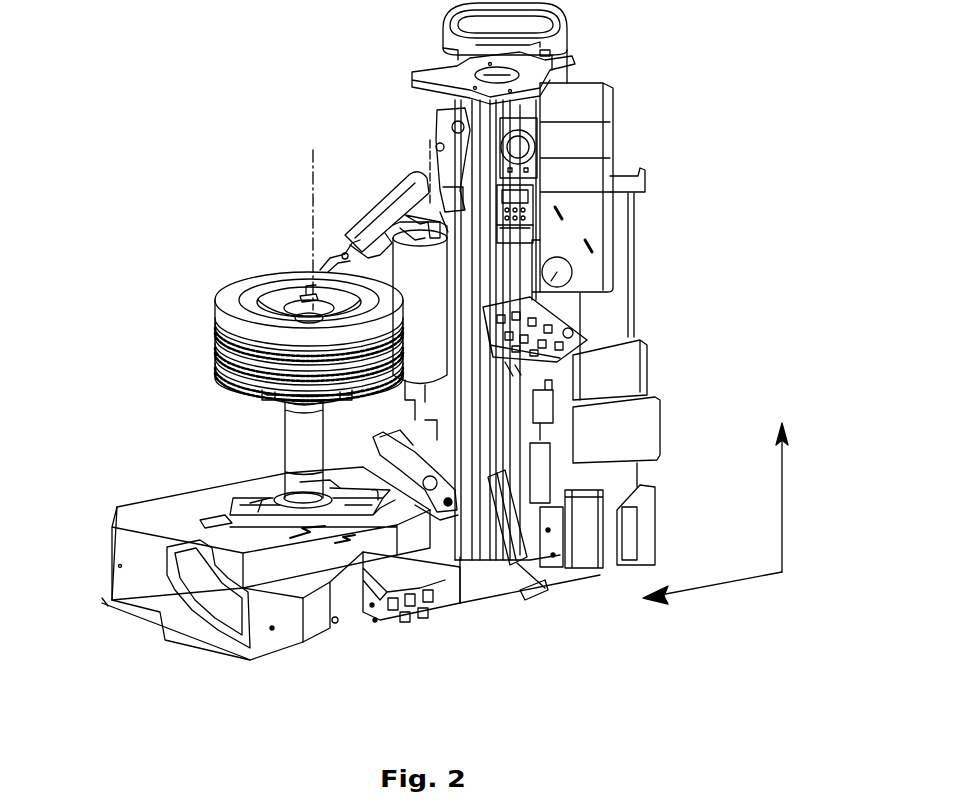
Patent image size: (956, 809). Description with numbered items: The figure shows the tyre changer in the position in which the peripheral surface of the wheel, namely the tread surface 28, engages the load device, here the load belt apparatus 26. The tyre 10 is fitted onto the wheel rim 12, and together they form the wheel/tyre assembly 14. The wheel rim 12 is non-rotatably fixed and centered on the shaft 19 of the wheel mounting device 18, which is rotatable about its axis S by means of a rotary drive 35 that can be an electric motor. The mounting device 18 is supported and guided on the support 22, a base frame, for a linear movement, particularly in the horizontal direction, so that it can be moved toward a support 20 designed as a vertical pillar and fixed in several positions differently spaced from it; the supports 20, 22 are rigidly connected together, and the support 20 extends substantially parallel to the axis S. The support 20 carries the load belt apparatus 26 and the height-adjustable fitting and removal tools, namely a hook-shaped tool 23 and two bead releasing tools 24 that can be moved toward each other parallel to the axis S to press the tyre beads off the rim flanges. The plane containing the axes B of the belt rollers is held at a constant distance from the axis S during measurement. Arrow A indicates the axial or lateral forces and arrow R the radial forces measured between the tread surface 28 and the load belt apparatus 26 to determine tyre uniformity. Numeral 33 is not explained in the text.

The tyre 10 is at (227, 304).
The wheel rim 12 is at (275, 297).
The wheel/tyre assembly 14 is at (232, 325).
The wheel mounting device 18 is at (225, 450).
The shaft 19 is at (262, 398).
The support 20 is at (567, 33).
The support 22 is at (112, 540).
The hook-shaped tool 23 is at (330, 258).
The bead releasing tools 24 is at (450, 207).
The load belt apparatus 26 is at (420, 321).
The tread surface 28 is at (213, 358).
The platform 33 is at (232, 502).
The rotary drive 35 is at (410, 217).
The axes of the belt rollers B is at (430, 153).
The axis of the mounting device S is at (312, 160).
The arrow A is at (793, 488).
The arrow R is at (708, 605).